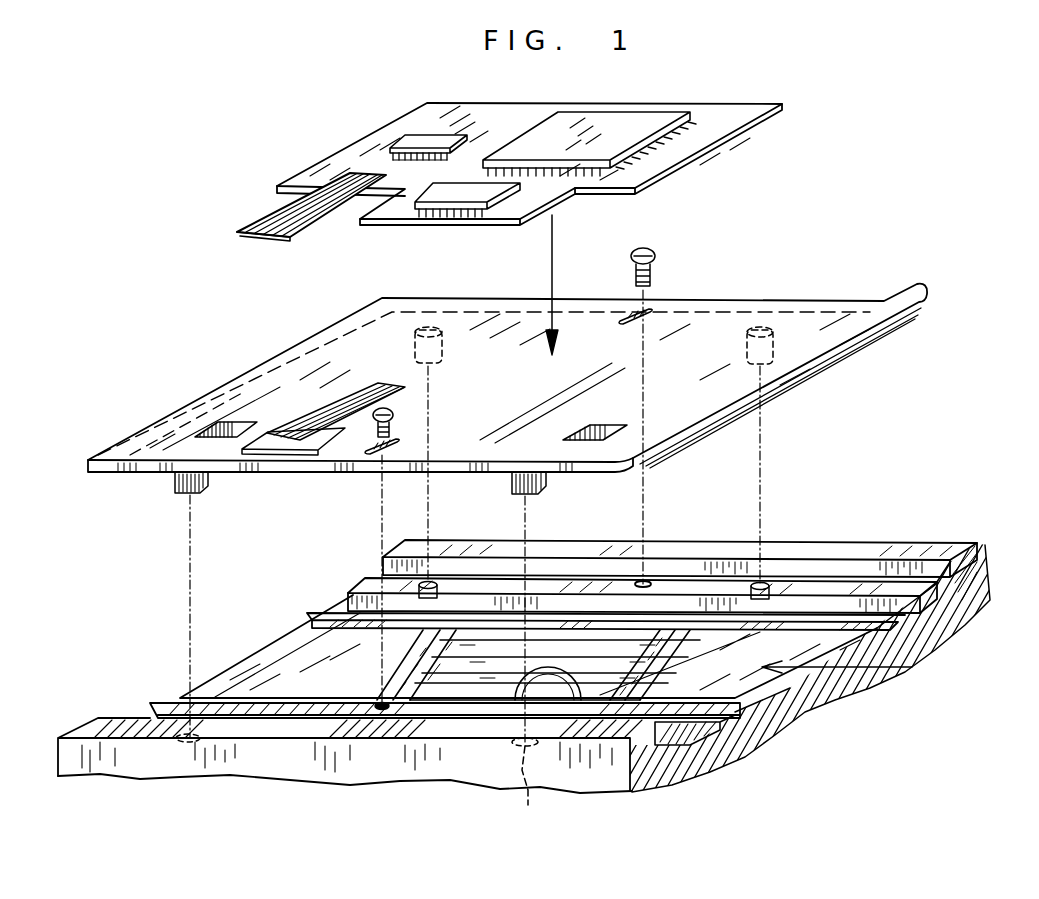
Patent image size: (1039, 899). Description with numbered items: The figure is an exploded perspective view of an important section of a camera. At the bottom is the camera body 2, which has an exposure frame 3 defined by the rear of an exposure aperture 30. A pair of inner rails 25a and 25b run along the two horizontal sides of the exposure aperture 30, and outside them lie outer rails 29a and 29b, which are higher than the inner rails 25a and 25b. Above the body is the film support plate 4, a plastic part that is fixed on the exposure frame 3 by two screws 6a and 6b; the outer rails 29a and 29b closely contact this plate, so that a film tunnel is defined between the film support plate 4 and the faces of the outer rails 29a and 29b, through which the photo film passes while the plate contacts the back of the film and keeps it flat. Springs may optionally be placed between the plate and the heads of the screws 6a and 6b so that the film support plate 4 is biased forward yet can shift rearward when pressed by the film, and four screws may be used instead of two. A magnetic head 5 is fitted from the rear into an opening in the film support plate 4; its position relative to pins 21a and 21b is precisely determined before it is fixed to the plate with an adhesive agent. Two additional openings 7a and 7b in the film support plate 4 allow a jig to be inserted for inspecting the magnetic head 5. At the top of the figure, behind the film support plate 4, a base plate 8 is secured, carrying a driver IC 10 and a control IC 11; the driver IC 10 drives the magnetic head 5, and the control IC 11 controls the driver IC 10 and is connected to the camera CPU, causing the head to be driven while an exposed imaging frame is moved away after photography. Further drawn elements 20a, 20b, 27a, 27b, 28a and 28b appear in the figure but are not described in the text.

The camera body 2 is at (360, 812).
The exposure frame 3 is at (266, 664).
The film support plate 4 is at (712, 275).
The magnetic head 5 is at (278, 478).
The screw 6a is at (643, 246).
The screw 6b is at (395, 412).
The additional opening 7a is at (602, 425).
The additional opening 7b is at (230, 422).
The base plate 8 is at (773, 128).
The driver IC 10 is at (428, 137).
The control IC 11 is at (603, 128).
The standoff 20a is at (762, 328).
The standoff 20b is at (428, 328).
The pin 21a is at (546, 486).
The pin 21b is at (185, 495).
The inner rail 25a is at (885, 628).
The inner rail 25b is at (750, 708).
The post 27a is at (761, 584).
The post 27b is at (430, 583).
The hole 28a is at (527, 789).
The hole 28b is at (187, 735).
The outer rail 29a is at (852, 578).
The outer rail 29b is at (686, 745).
The exposure aperture 30 is at (333, 690).